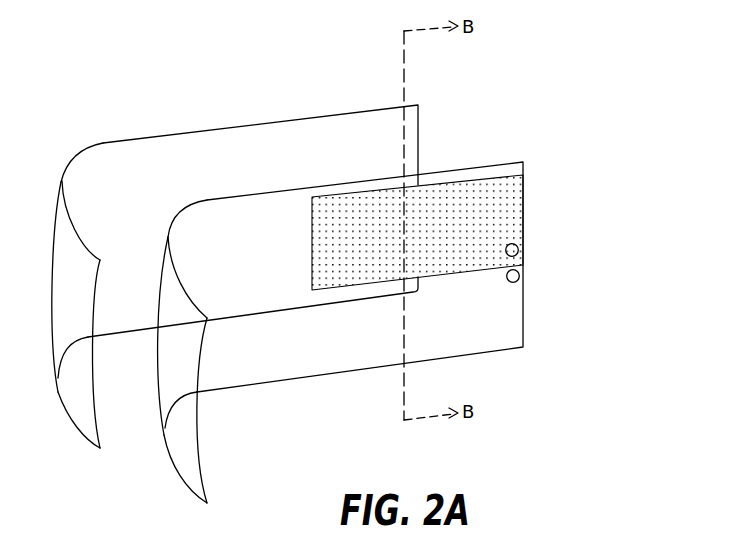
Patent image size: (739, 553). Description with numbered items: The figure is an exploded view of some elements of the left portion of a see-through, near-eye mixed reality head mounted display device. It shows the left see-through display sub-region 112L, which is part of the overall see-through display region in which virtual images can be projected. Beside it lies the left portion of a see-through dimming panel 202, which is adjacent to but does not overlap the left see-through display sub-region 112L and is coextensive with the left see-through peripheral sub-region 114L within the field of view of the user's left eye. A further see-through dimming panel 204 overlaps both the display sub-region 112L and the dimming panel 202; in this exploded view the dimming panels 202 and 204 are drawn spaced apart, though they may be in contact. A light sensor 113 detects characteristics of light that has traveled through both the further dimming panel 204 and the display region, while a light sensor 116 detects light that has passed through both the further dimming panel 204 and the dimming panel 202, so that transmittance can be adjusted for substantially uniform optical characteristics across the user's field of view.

The left see-through peripheral sub-region 114L is at (203, 105).
The further see-through dimming panel 204 is at (100, 143).
The see-through dimming panel 202 is at (252, 372).
The left see-through display sub-region 112L is at (505, 228).
The light sensor 113 is at (518, 251).
The light sensor 116 is at (517, 279).